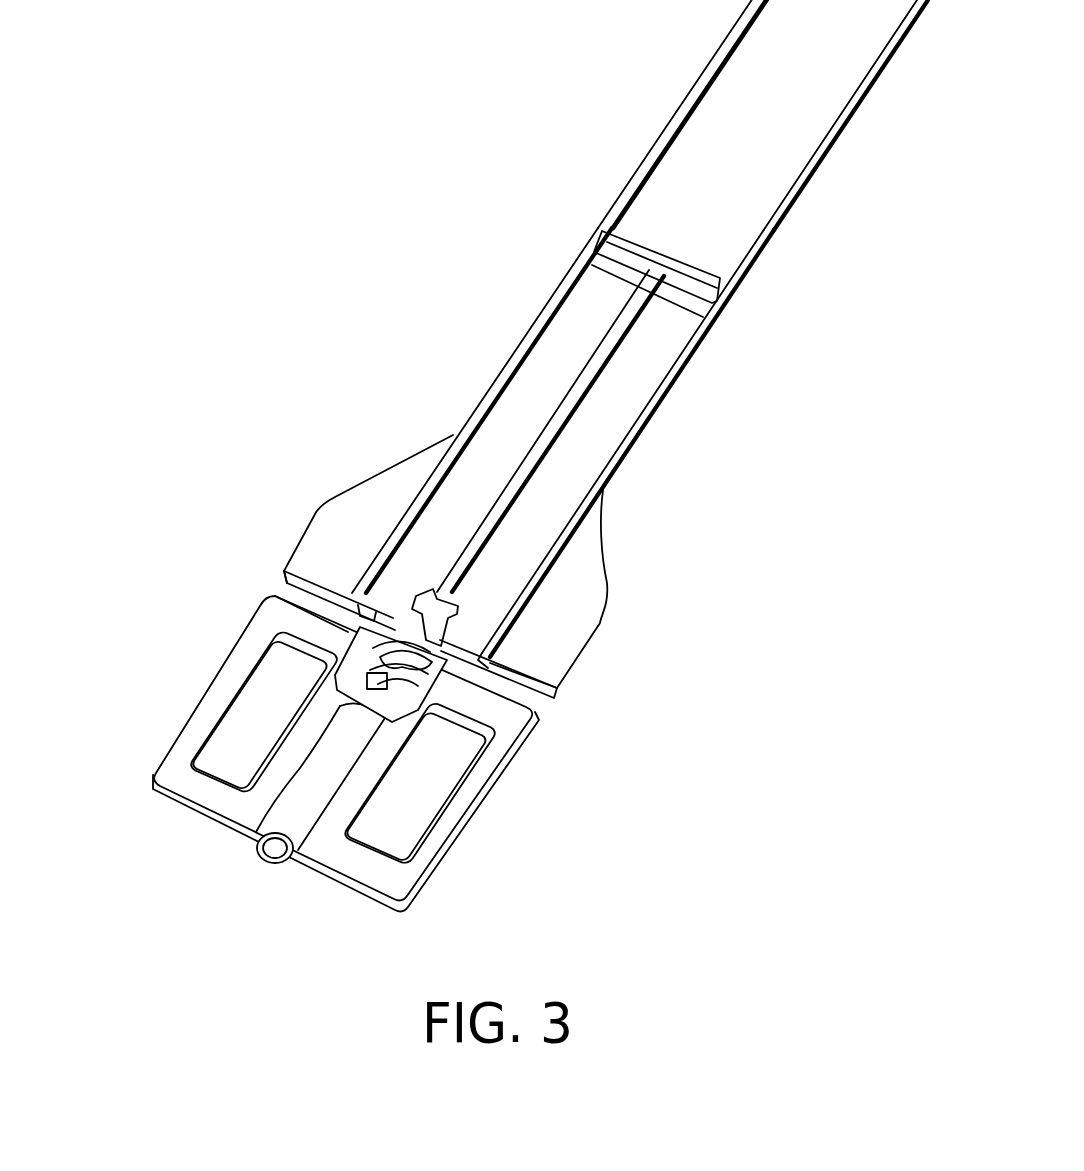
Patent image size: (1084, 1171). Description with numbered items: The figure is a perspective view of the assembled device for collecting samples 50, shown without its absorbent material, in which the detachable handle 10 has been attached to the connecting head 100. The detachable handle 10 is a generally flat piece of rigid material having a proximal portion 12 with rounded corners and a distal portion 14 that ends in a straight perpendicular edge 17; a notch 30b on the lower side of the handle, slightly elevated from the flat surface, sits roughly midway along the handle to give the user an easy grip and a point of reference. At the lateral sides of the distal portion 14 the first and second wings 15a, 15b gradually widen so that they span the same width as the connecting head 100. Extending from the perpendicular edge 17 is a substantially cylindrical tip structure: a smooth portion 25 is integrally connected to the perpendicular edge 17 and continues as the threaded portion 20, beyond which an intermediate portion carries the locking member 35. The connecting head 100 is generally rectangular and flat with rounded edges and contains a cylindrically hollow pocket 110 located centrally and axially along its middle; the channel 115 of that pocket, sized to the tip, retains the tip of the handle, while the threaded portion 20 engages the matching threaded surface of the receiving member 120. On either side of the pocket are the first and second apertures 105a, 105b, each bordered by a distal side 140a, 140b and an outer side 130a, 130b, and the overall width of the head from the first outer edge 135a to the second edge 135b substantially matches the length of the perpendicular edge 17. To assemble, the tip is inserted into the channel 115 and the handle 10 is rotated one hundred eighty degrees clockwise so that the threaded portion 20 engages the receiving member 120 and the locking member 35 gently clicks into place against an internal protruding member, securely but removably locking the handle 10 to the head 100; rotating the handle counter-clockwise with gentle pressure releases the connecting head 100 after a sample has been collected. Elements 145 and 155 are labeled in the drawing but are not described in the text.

The detachable handle 10 is at (720, 151).
The proximal portion 12 is at (793, 112).
The notch 30b is at (690, 270).
The device for collecting samples 50 is at (415, 463).
The distal portion 14 is at (530, 390).
The first wing 15a is at (350, 537).
The second wing 15b is at (550, 620).
The smooth portion 25 is at (420, 617).
The perpendicular edge 17 is at (284, 592).
The threaded portion 20 is at (267, 598).
The locking member 35 is at (280, 620).
The connecting head 100 is at (355, 789).
The first aperture 105a is at (425, 783).
The second aperture 105b is at (237, 738).
The cylindrically hollow pocket 110 is at (290, 808).
The channel 115 is at (280, 862).
The receiving member 120 is at (520, 730).
The first outer side 130a is at (452, 828).
The second outer side 130b is at (237, 667).
The first outer edge 135a is at (452, 858).
The second edge 135b is at (208, 690).
The first distal side 140a is at (372, 867).
The second distal side 140b is at (203, 795).
The bottom wall 145 is at (323, 870).
The fastener 155 is at (420, 677).